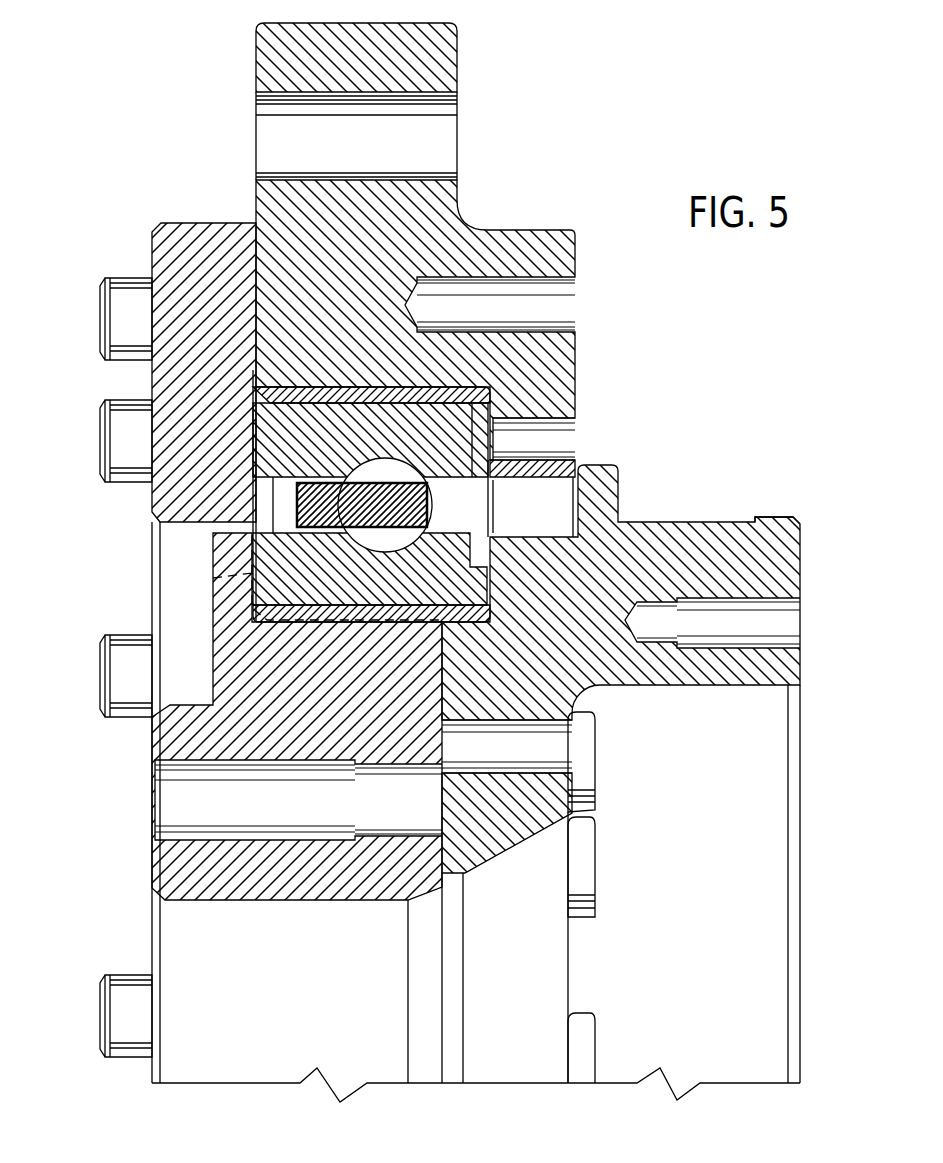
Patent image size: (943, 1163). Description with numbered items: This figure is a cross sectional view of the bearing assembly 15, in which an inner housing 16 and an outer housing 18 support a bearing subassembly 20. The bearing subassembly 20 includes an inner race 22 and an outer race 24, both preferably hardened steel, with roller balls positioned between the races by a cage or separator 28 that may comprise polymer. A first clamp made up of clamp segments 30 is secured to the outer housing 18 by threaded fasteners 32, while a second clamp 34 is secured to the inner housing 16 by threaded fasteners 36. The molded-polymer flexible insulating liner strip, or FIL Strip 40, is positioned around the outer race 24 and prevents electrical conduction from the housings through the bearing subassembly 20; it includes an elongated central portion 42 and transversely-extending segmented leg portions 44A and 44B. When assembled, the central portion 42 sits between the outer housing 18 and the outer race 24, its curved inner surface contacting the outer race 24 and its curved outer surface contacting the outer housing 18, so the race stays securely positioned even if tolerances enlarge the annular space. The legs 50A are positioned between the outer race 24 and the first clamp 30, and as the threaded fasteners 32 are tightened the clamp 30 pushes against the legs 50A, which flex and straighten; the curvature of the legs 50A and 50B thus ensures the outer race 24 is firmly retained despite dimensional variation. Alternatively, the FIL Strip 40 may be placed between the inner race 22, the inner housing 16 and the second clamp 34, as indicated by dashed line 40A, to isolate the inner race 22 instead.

The bearing assembly 15 is at (512, 230).
The inner housing 16 is at (152, 738).
The outer housing 18 is at (459, 199).
The bearing subassembly 20 is at (488, 556).
The inner race 22 is at (482, 565).
The outer race 24 is at (454, 438).
The cage or separator 28 is at (297, 513).
The clamp segments 30 is at (168, 222).
The threaded fasteners 32 is at (100, 312).
The second clamp 34 is at (777, 517).
The threaded fasteners 36 is at (598, 758).
The flexible insulating liner strip (FIL Strip) 40 is at (258, 458).
The alternative FIL Strip position 40A is at (213, 578).
The elongated central portion 42 is at (414, 388).
The segmented leg portions 44A is at (258, 480).
The segmented leg portions 44B is at (540, 418).
The legs 50A is at (258, 440).
The legs 50B is at (578, 426).